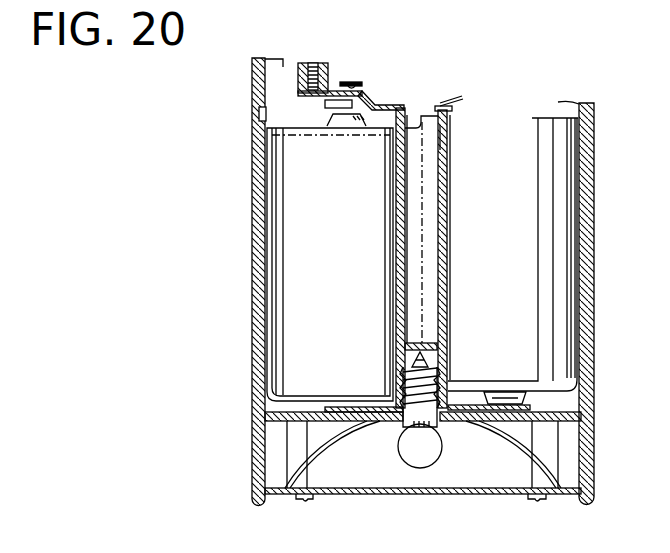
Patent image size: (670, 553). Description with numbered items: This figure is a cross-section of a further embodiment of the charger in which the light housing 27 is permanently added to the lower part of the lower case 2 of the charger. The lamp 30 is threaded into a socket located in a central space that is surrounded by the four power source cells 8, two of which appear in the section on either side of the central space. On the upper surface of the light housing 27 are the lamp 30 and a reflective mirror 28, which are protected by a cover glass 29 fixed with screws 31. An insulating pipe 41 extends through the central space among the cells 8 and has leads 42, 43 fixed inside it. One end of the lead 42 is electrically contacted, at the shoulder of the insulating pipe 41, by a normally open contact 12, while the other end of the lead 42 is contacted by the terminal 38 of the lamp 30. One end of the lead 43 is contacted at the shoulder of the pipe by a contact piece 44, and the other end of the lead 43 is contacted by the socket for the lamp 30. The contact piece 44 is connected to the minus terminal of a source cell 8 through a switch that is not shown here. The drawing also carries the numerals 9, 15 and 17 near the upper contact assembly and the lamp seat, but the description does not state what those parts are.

The lower case 2 is at (596, 237).
The power source cells 8 is at (285, 271).
The screw 9 is at (299, 94).
The normally open contact 12 is at (369, 107).
The screw head 15 is at (350, 82).
The lamp base 17 is at (461, 402).
The light housing 27 is at (596, 438).
The reflective mirror 28 is at (337, 441).
The cover glass 29 is at (418, 495).
The lamp 30 is at (443, 450).
The screws 31 is at (303, 498).
The terminal of the lamp 38 is at (415, 358).
The insulating pipe 41 is at (397, 194).
The lead 42 is at (408, 230).
The lead 43 is at (437, 160).
The contact piece 44 is at (446, 103).